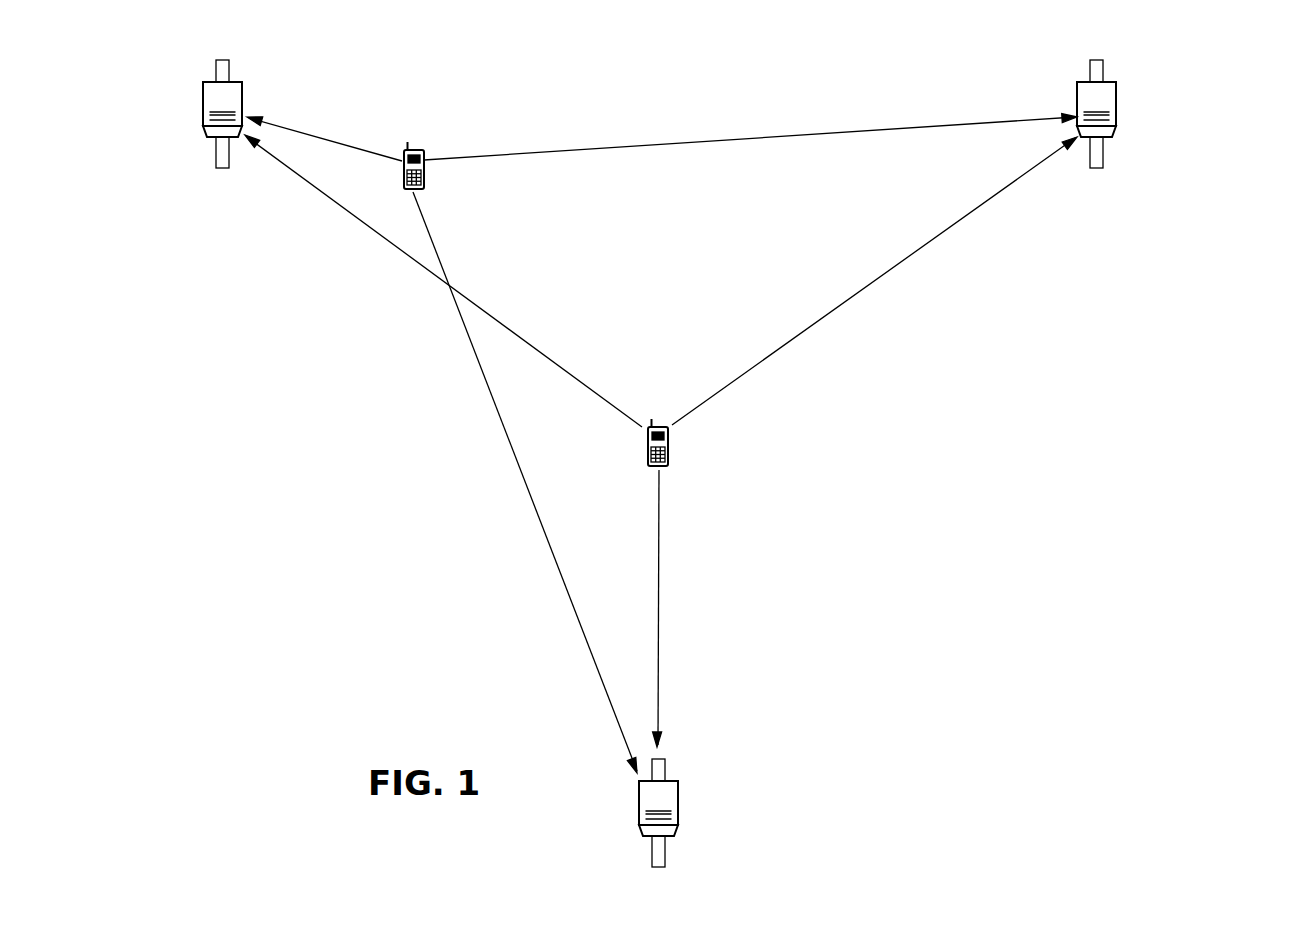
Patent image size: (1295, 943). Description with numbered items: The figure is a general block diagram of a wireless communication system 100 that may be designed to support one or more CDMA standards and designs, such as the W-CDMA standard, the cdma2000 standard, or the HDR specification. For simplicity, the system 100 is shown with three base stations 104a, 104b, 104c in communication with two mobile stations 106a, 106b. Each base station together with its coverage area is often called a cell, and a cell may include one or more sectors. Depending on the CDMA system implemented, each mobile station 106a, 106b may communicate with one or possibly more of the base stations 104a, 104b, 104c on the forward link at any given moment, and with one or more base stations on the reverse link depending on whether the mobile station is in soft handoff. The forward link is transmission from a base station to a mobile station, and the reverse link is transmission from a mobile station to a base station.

The wireless communication system 100 is at (1240, 299).
The base station 104a is at (233, 78).
The base station 104b is at (1107, 78).
The base station 104c is at (668, 776).
The mobile station 106a is at (418, 148).
The mobile station 106b is at (652, 469).